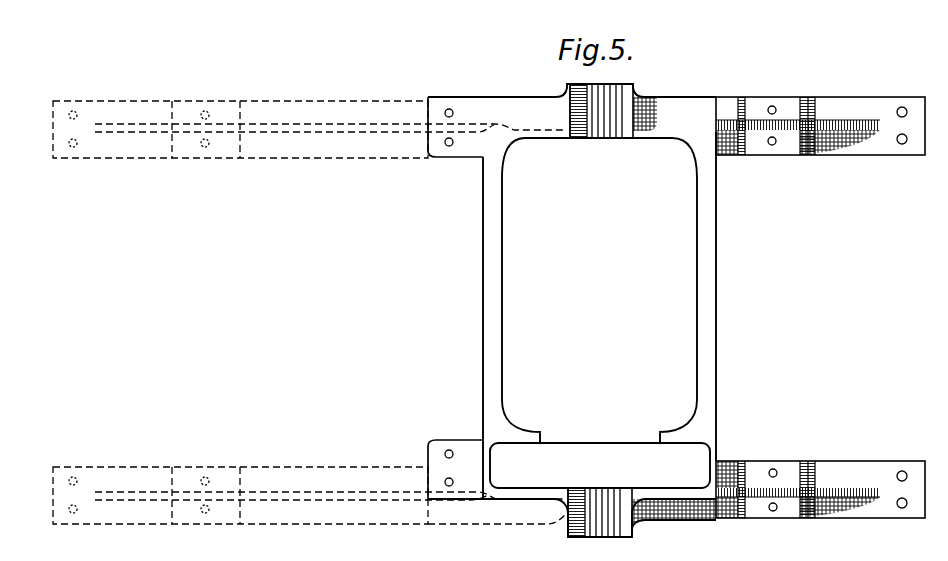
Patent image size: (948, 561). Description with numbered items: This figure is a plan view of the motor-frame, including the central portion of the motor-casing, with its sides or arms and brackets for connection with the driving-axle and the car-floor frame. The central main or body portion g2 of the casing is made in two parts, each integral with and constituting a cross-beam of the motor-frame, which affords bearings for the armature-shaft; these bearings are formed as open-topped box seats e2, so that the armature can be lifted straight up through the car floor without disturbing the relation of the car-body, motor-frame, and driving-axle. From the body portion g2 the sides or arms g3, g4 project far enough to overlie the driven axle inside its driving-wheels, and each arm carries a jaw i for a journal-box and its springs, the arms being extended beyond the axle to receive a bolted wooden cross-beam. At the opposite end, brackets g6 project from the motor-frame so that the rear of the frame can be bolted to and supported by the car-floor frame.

The central main or body portion g2 is at (586, 310).
The open-topped box seats e2 is at (642, 310).
The brackets g6 is at (440, 154).
The side or arm of motor-frame g3 is at (820, 115).
The side or arm of motor-frame g4 is at (820, 478).
The jaw i is at (776, 297).